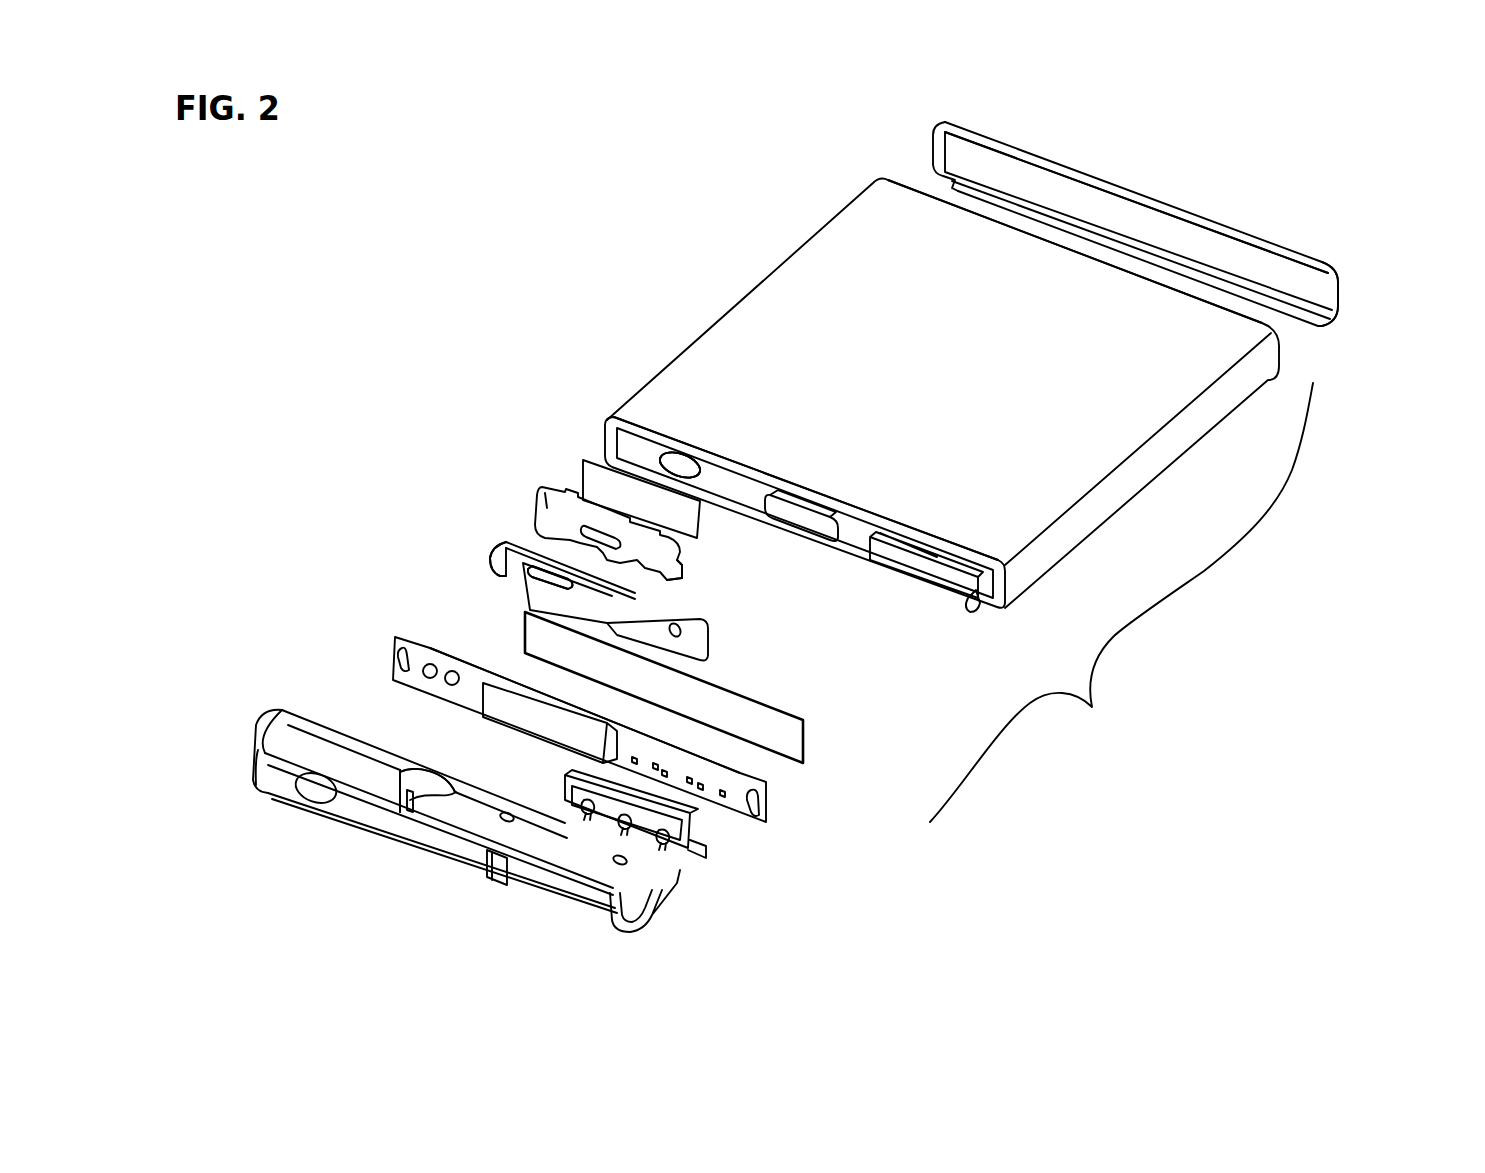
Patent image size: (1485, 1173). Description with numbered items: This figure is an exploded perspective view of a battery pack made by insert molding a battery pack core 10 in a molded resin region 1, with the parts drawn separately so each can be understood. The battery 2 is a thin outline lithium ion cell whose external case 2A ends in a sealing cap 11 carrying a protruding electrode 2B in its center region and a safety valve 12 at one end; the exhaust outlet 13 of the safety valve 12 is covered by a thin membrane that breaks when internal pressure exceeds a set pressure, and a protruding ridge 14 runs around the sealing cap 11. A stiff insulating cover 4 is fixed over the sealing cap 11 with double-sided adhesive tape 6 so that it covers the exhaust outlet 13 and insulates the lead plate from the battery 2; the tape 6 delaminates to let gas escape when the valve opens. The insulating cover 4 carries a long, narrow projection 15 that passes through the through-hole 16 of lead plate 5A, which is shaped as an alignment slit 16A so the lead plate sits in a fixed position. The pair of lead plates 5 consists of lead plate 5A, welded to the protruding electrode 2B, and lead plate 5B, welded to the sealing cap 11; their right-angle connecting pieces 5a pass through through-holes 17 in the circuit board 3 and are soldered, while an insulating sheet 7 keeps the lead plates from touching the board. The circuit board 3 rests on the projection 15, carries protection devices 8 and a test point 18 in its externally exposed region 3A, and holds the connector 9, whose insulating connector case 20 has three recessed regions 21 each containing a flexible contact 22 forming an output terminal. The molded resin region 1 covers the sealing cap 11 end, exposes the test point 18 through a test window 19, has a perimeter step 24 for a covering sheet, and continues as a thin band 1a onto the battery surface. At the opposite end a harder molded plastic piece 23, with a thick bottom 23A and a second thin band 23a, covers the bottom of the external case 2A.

The molded resin region 1 is at (443, 845).
The thin band 1a is at (500, 805).
The battery 2 is at (744, 226).
The external case 2A is at (1005, 393).
The protruding electrode 2B is at (800, 523).
The circuit board 3 is at (703, 763).
The externally exposed region 3A is at (437, 688).
The insulating cover 4 is at (545, 490).
The lead plates 5 is at (930, 613).
The lead plate 5A is at (650, 618).
The lead plate 5B is at (900, 563).
The connecting pieces 5a is at (495, 568).
The double-sided adhesive tape 6 is at (575, 490).
The insulating sheet 7 is at (787, 737).
The protection devices 8 is at (527, 717).
The connector 9 is at (642, 875).
The battery pack core 10 is at (1121, 602).
The sealing cap 11 is at (743, 487).
The safety valve 12 is at (676, 452).
The exhaust outlet 13 is at (686, 455).
The protruding ridge 14 is at (681, 450).
The projection 15 is at (682, 548).
The through-hole 16 is at (925, 745).
The alignment slit 16A is at (537, 577).
The through-holes 17 is at (397, 657).
The test point 18 is at (470, 632).
The test window 19 is at (315, 793).
The connector case 20 is at (630, 835).
The recessed regions 21 is at (597, 817).
The flexible contacts 22 is at (582, 812).
The molded plastic piece 23 is at (1230, 195).
The second thin band 23a is at (993, 148).
The bottom 23A is at (1313, 290).
The step 24 is at (455, 782).